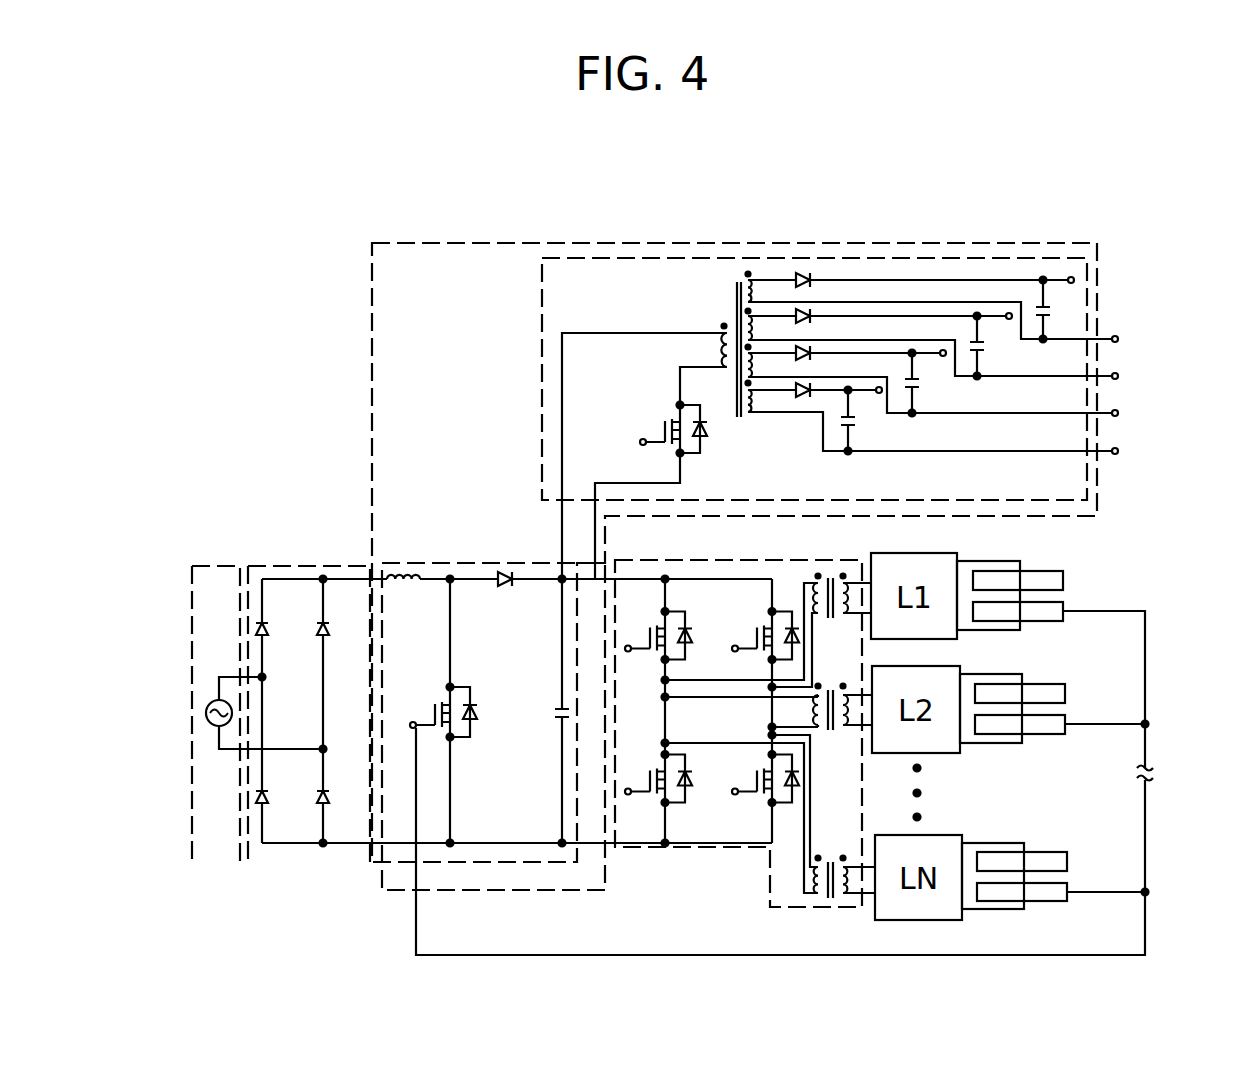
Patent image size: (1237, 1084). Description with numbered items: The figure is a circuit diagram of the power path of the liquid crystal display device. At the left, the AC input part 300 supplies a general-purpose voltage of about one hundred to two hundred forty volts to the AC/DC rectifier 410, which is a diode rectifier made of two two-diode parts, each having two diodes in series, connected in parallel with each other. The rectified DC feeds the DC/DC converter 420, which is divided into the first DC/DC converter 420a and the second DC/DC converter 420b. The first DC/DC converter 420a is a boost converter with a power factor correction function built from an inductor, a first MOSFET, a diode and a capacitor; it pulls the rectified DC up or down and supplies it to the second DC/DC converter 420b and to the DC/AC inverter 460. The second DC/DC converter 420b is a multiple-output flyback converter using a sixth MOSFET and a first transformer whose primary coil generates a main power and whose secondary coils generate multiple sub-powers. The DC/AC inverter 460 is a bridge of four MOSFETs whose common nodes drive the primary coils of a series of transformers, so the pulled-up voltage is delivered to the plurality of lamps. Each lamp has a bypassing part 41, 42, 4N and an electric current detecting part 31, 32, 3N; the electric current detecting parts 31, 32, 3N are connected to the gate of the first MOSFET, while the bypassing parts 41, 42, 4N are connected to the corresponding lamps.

The AC input part 300 is at (217, 863).
The AC/DC rectifier 410 is at (313, 863).
The DC/DC converter 420 is at (733, 243).
The first DC/DC converter 420a is at (485, 863).
The second DC/DC converter 420b is at (808, 258).
The DC/AC inverter 460 is at (696, 851).
The bypassing part 41 is at (1057, 572).
The electric current detecting part 31 is at (1057, 602).
The bypassing part 42 is at (1059, 685).
The electric current detecting part 32 is at (1059, 715).
The bypassing part 4N is at (1061, 853).
The electric current detecting part 3N is at (1061, 884).